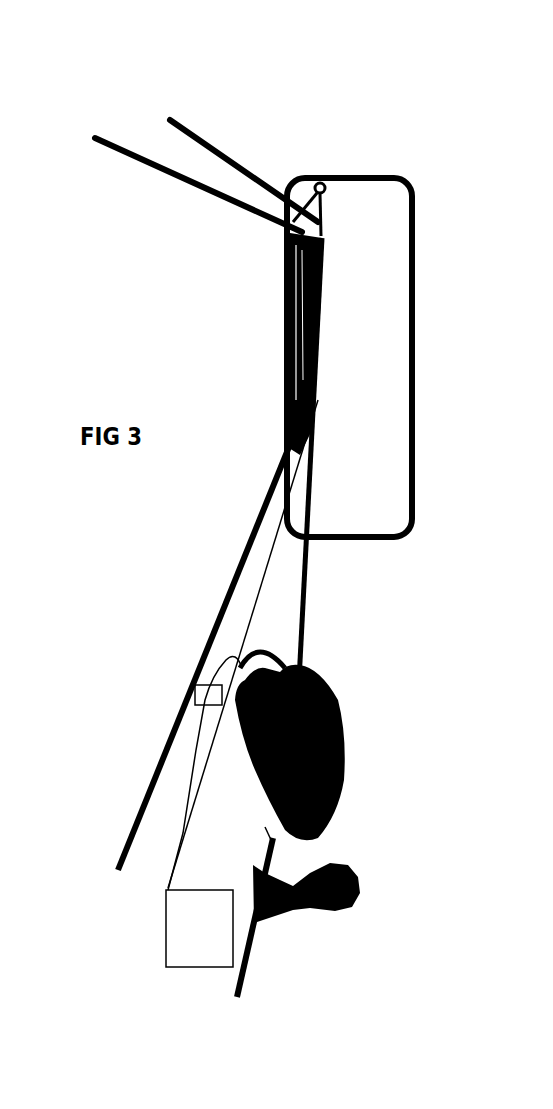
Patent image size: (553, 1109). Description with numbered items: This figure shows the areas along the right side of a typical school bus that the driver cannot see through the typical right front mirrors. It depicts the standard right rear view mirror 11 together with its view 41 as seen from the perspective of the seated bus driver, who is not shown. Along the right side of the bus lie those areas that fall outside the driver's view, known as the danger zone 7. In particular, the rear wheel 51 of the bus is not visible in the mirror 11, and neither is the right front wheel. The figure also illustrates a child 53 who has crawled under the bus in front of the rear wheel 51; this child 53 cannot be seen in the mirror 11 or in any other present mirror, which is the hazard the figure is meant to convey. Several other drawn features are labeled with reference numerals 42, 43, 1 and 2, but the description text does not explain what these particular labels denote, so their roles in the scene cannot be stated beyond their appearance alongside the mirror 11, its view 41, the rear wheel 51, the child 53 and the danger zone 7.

The right rear view mirror 11 is at (420, 202).
The view 41 is at (385, 275).
The guide member 42 is at (338, 429).
The connecting member 43 is at (340, 563).
The drive unit 1 is at (335, 740).
The base 2 is at (334, 825).
The rear wheel 51 is at (360, 763).
The child 53 is at (368, 856).
The danger zone 7 is at (427, 895).